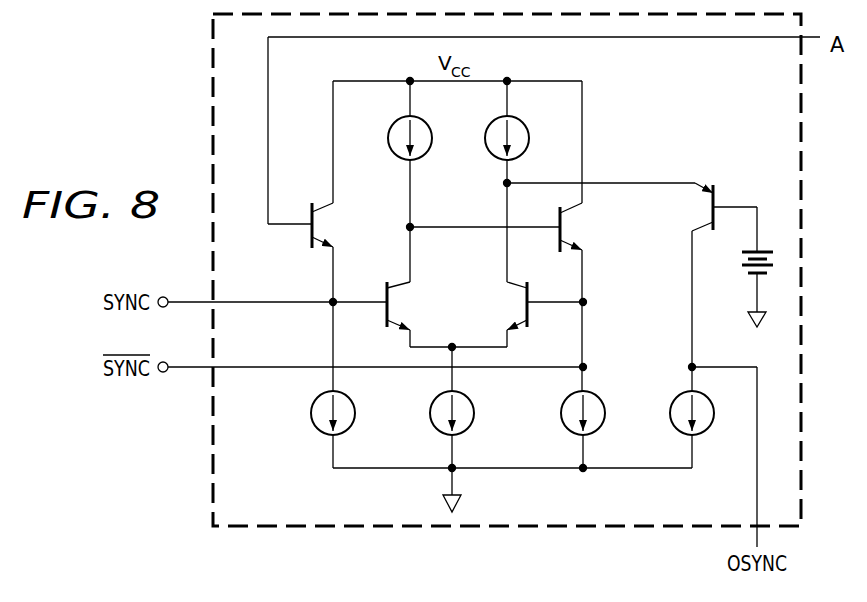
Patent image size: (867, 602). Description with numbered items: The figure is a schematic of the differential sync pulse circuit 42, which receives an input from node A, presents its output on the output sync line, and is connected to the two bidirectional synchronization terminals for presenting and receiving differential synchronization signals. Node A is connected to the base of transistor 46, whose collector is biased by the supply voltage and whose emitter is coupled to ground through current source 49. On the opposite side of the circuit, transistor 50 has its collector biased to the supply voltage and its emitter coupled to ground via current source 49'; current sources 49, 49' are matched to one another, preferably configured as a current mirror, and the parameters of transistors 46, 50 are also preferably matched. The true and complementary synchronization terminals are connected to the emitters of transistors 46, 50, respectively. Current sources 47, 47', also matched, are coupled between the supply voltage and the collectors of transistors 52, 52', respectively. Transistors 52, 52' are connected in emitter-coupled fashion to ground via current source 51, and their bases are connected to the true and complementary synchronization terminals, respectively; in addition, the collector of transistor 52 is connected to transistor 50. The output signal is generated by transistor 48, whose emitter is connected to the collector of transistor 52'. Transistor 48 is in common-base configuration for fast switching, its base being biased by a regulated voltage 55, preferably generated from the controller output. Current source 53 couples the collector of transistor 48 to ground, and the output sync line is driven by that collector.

The differential sync pulse circuit 42 is at (259, 514).
The transistor 46 is at (312, 242).
The current source 47 is at (433, 129).
The current source 47' is at (483, 155).
The transistor 48 is at (724, 190).
The current source 49 is at (312, 431).
The current source 49' is at (612, 427).
The transistor 50 is at (560, 214).
The current source 51 is at (471, 427).
The transistor 52 is at (424, 320).
The transistor 52' is at (545, 320).
The current source 53 is at (676, 399).
The regulated voltage 55 is at (742, 274).